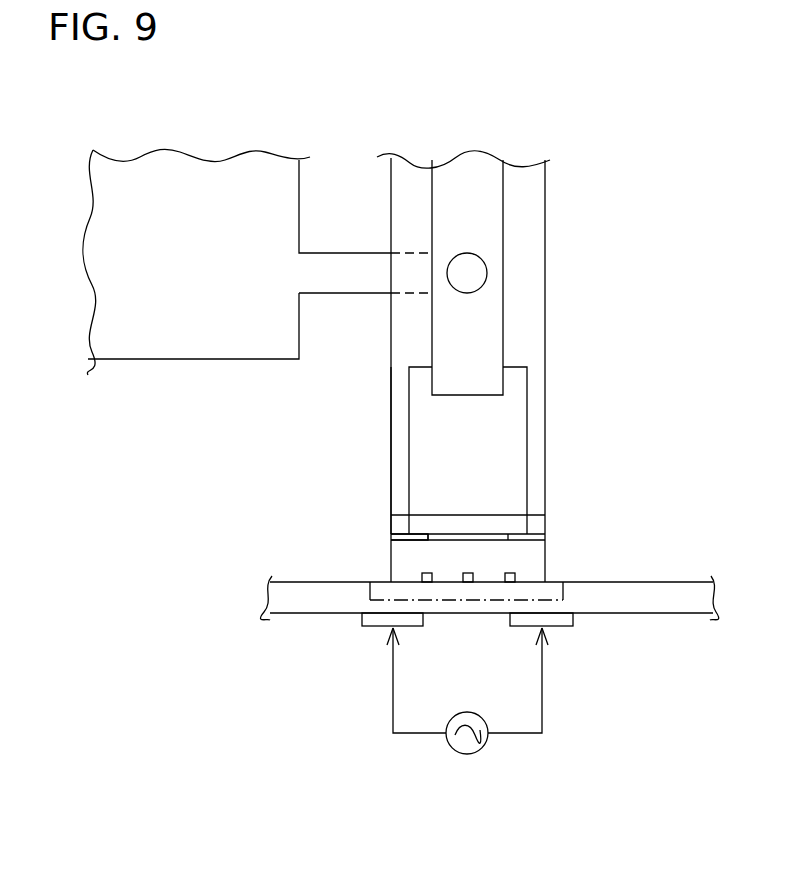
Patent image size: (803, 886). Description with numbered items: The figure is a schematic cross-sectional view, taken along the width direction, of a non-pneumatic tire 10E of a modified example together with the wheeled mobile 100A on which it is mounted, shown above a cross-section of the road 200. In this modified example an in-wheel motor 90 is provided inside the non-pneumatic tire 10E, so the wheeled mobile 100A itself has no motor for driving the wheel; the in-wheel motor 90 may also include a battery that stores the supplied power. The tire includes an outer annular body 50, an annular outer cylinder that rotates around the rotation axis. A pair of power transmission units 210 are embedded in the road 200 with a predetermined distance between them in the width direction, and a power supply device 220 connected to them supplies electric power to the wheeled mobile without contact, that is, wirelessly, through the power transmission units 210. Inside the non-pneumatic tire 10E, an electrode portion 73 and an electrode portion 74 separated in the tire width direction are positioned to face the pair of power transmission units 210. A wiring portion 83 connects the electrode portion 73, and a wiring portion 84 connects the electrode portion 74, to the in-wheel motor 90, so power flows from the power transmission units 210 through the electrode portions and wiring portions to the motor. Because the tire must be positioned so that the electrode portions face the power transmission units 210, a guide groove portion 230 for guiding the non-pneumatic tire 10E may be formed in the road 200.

The wheeled mobile 100A is at (238, 178).
The non-pneumatic tire 10E is at (558, 240).
The in-wheel motor 90 is at (505, 320).
The wiring portion 84 is at (527, 440).
The wiring portion 83 is at (409, 463).
The outer annular body 50 is at (509, 514).
The electrode portion 73 is at (391, 540).
The electrode portion 74 is at (545, 537).
The road 200 is at (688, 615).
The guide groove portion 230 is at (565, 594).
The power transmission unit 210 is at (370, 628).
The power supply device 220 is at (470, 712).